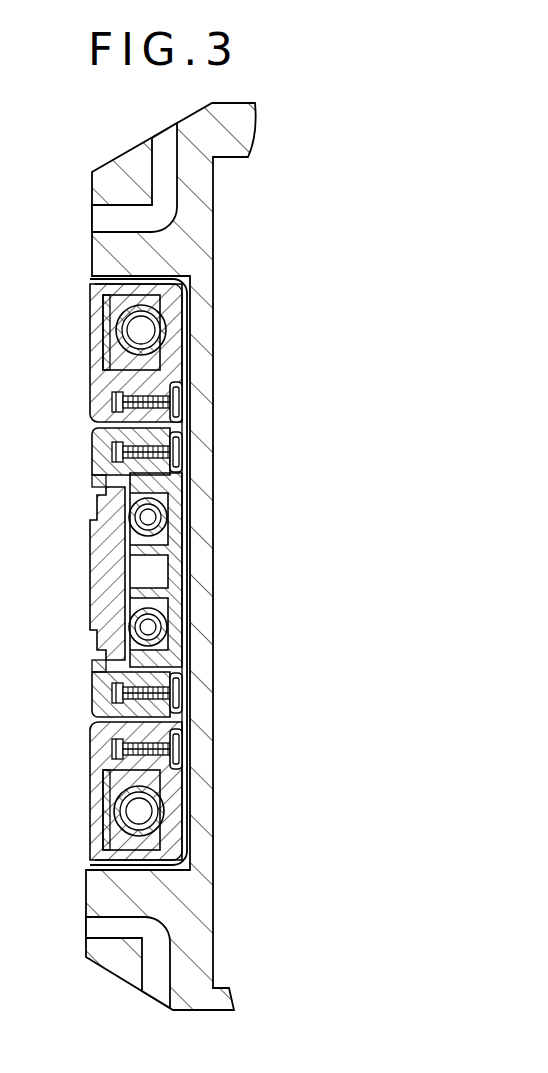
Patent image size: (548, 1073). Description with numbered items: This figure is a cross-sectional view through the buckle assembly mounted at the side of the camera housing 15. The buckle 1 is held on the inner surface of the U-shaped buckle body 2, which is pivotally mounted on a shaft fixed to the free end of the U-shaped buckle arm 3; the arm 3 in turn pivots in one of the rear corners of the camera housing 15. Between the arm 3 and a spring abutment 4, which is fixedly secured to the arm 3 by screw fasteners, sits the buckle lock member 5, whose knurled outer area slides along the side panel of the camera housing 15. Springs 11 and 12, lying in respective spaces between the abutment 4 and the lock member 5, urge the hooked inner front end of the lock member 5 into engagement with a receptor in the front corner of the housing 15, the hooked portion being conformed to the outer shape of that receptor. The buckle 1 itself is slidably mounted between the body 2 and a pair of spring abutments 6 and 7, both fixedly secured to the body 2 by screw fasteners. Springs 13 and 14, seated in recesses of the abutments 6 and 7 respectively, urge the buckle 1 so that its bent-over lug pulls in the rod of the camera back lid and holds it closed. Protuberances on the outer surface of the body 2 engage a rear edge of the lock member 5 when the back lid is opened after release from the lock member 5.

The buckle 1 is at (108, 356).
The buckle body 2 is at (98, 404).
The buckle arm 3 is at (96, 476).
The spring abutment 4 is at (167, 545).
The buckle lock member 5 is at (98, 578).
The spring abutment 6 is at (177, 313).
The spring abutment 7 is at (167, 782).
The spring 11 is at (130, 531).
The spring 12 is at (130, 637).
The spring 13 is at (106, 350).
The spring 14 is at (160, 817).
The camera housing 15 is at (212, 993).